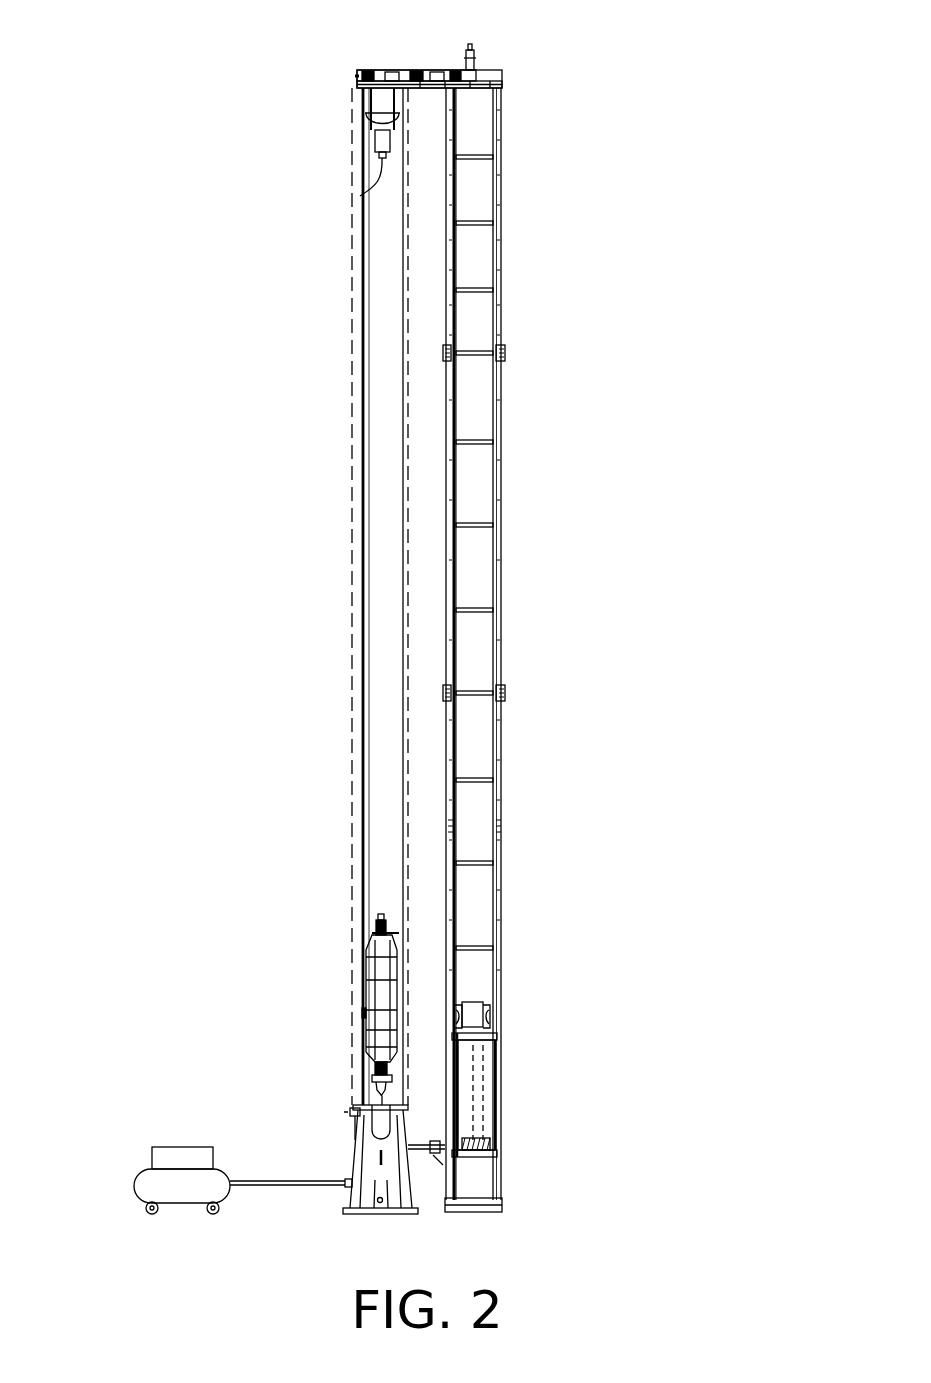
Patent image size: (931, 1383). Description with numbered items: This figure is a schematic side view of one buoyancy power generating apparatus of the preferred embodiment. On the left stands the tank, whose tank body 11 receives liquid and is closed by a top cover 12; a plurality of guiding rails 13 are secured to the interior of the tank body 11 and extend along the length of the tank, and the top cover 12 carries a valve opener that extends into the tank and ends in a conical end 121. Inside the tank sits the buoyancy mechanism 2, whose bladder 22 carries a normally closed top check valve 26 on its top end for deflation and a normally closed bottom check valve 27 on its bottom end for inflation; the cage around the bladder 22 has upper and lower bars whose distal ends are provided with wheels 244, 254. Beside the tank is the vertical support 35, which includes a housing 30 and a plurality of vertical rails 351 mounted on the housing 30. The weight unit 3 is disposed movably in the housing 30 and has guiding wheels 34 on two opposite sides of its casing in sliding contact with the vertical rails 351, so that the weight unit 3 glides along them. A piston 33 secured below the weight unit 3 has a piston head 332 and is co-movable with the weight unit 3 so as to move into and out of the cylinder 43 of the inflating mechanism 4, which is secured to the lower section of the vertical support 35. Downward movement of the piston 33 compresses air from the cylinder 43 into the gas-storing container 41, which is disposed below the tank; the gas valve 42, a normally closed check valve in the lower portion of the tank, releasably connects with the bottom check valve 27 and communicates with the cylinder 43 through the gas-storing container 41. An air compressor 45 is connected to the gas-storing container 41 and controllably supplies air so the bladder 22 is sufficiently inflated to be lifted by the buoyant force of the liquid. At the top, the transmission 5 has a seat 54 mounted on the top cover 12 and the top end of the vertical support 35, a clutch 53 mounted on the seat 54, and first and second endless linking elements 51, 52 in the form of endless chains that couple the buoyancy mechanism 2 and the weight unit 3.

The buoyancy mechanism 2 is at (364, 946).
The weight unit 3 is at (486, 1004).
The inflating mechanism 4 is at (498, 1070).
The transmission 5 is at (480, 52).
The tank body 11 is at (352, 152).
The top cover 12 is at (365, 89).
The guiding rails 13 is at (405, 368).
The bladder 22 is at (380, 990).
The top check valve 26 is at (373, 932).
The bottom check valve 27 is at (378, 1070).
The housing 30 is at (500, 240).
The piston 33 is at (478, 1092).
The guiding wheels 34 is at (488, 1012).
The vertical support 35 is at (502, 730).
The gas-storing container 41 is at (356, 1162).
The gas valve 42 is at (368, 1108).
The cylinder 43 is at (498, 1120).
The air compressor 45 is at (128, 1138).
The first endless linking element 51 is at (457, 500).
The second endless linking element 52 is at (362, 490).
The clutch 53 is at (445, 72).
The seat 54 is at (458, 70).
The conical end 121 is at (362, 198).
The wheels 244 is at (398, 936).
The wheels 254 is at (400, 1058).
The piston head 332 is at (500, 1150).
The vertical rails 351 is at (456, 840).